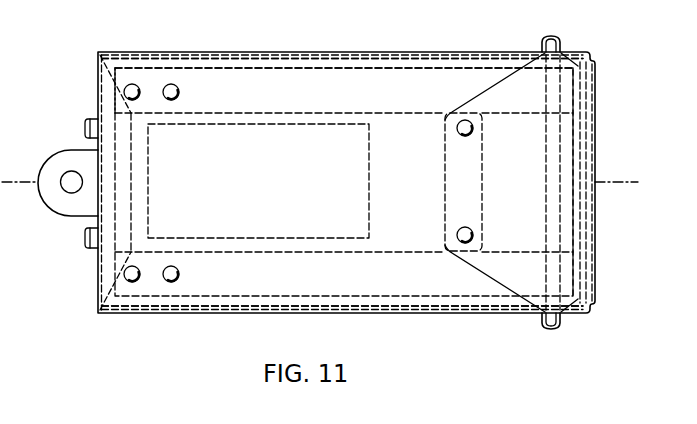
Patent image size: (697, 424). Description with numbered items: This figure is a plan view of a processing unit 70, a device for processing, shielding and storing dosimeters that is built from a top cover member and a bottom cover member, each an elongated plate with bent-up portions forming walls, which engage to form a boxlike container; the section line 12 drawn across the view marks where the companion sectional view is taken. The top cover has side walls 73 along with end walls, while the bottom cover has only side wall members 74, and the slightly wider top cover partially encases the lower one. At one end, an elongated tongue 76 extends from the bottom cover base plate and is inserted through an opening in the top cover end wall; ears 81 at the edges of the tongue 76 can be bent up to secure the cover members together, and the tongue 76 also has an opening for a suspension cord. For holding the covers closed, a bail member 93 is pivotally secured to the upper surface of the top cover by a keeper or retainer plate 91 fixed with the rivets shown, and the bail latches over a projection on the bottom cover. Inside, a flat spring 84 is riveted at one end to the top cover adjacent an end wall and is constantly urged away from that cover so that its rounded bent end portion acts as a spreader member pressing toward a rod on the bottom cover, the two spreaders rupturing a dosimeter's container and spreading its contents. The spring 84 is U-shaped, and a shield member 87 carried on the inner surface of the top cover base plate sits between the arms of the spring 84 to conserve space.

The section line 12- 12 is at (7, 182).
The processing unit 70 is at (215, 54).
The side walls 73 is at (160, 56).
The side wall members 74 is at (292, 57).
The elongated tongue 76 is at (62, 153).
The ears 81 is at (86, 116).
The flat spring 84 is at (378, 82).
The shield member 87 is at (290, 138).
The keeper or retainer plate 91 is at (488, 101).
The bail member 93 is at (552, 37).